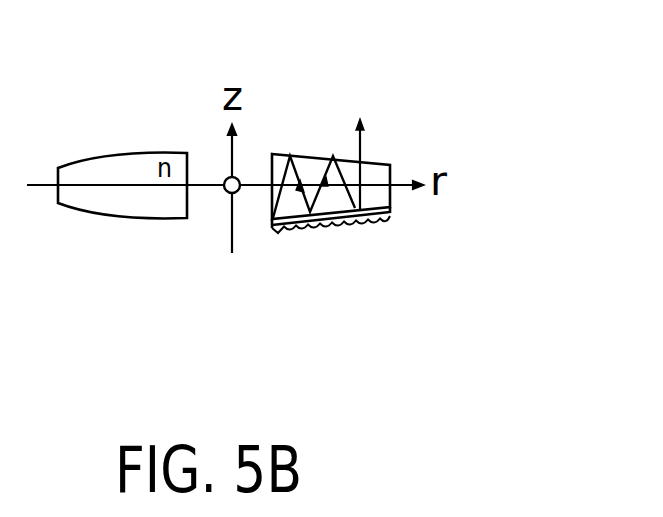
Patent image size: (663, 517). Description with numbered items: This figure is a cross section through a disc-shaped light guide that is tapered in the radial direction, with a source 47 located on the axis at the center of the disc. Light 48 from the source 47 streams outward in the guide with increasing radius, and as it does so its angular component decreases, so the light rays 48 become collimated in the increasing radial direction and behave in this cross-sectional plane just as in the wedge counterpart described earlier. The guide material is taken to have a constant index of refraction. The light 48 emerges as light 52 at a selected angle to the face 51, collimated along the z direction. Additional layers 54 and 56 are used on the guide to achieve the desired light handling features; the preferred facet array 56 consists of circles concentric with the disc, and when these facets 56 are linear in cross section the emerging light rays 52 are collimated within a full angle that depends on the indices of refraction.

The source 47 is at (238, 178).
The light rays 48 is at (312, 192).
The face 51 is at (386, 165).
The emerging light 52 is at (359, 138).
The additional layer 54 is at (390, 210).
The facet array 56 is at (380, 207).